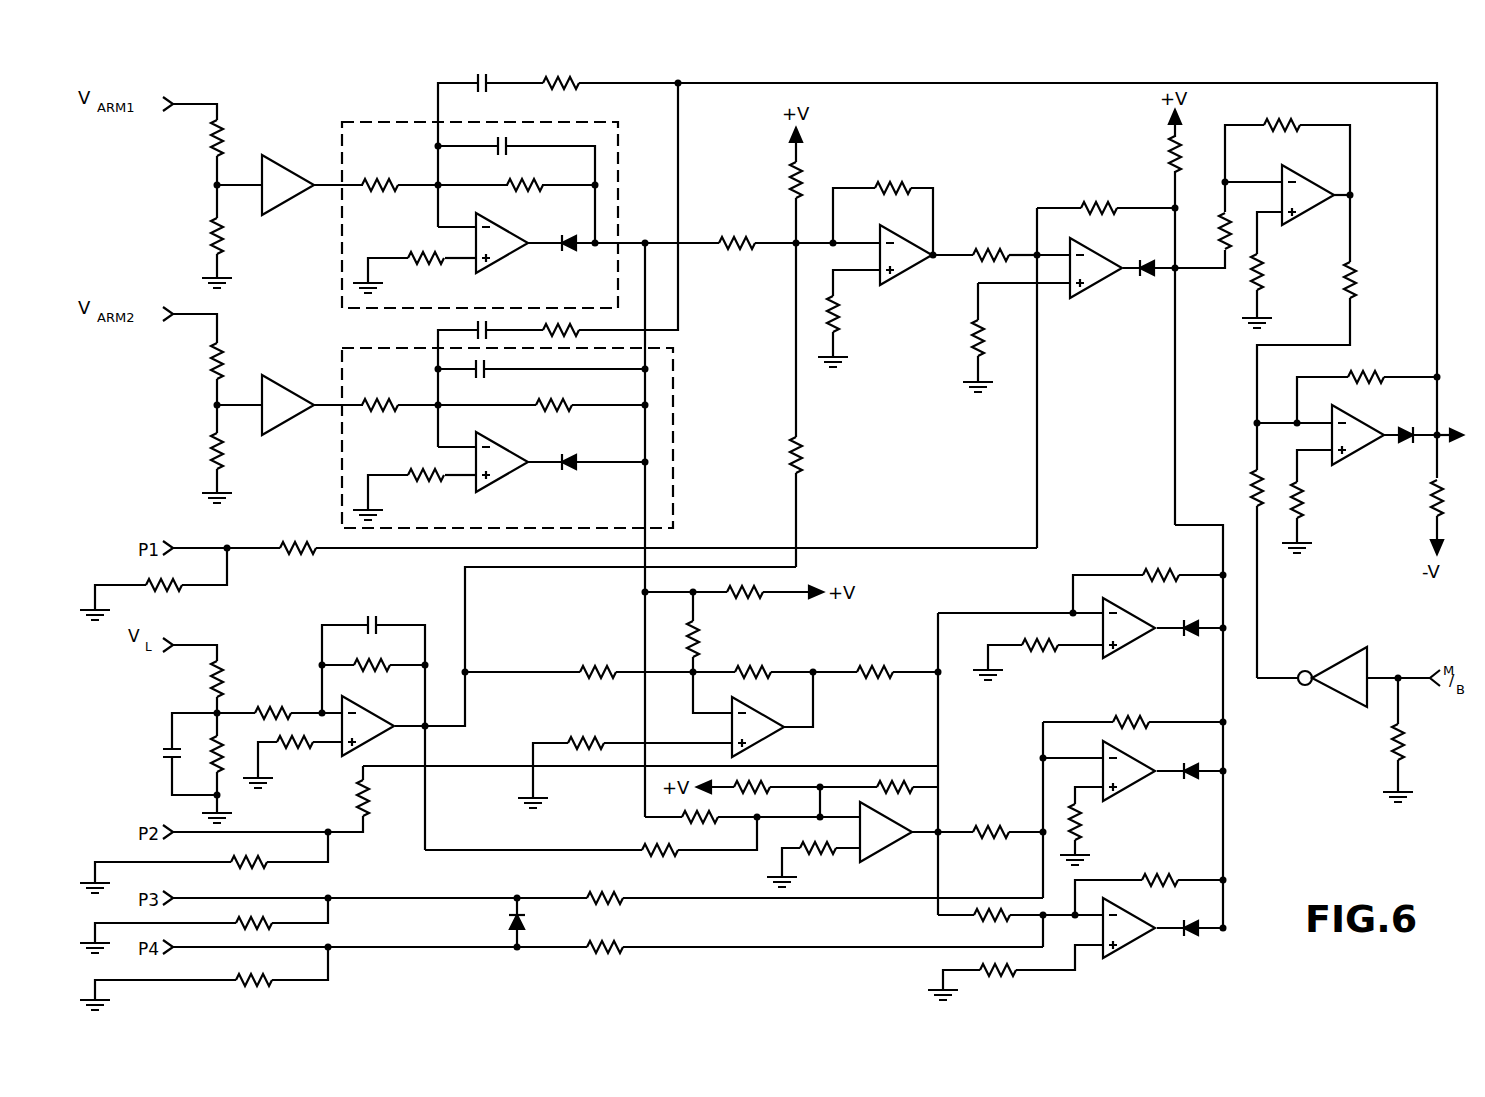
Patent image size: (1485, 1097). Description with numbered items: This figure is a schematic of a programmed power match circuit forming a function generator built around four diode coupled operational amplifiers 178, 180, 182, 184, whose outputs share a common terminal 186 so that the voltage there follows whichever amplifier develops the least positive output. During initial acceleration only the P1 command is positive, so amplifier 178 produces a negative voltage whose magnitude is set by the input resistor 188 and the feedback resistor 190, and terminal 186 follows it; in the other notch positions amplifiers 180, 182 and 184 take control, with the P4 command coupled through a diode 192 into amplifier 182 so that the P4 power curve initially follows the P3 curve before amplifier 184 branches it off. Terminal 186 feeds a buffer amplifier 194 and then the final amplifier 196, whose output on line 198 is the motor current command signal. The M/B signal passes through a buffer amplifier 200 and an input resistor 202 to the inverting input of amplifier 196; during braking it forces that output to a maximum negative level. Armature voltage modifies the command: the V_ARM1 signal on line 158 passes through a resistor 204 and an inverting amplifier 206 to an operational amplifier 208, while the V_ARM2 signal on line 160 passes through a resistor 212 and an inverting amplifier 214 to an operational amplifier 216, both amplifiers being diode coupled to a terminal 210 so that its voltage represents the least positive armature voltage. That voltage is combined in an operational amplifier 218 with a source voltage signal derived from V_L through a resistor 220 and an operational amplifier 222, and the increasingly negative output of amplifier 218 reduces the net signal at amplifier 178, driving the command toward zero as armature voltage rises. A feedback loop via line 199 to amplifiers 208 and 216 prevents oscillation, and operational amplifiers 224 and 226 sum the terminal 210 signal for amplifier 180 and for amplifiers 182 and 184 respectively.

The line 158 is at (193, 103).
The line 160 is at (220, 312).
The operational amplifier 178 is at (1130, 332).
The operational amplifier 180 is at (1190, 672).
The operational amplifier 182 is at (1190, 812).
The operational amplifier 184 is at (1188, 969).
The terminal 186 is at (1180, 272).
The input resistor 188 is at (994, 247).
The feedback resistor 190 is at (1105, 202).
The diode 192 is at (510, 918).
The buffer amplifier 194 is at (1324, 267).
The final amplifier 196 is at (1387, 497).
The line 198 is at (1443, 432).
The line 199 is at (1092, 84).
The buffer amplifier 200 is at (1353, 656).
The input resistor 202 is at (1243, 488).
The resistor 204 is at (206, 150).
The inverting amplifier 206 is at (287, 160).
The operational amplifier 208 is at (568, 292).
The terminal 210 is at (645, 238).
The resistor 212 is at (208, 362).
The inverting amplifier 214 is at (290, 387).
The operational amplifier 216 is at (570, 504).
The operational amplifier 218 is at (916, 322).
The resistor 220 is at (206, 676).
The operational amplifier 222 is at (338, 786).
The operational amplifier 224 is at (827, 754).
The operational amplifier 226 is at (920, 879).